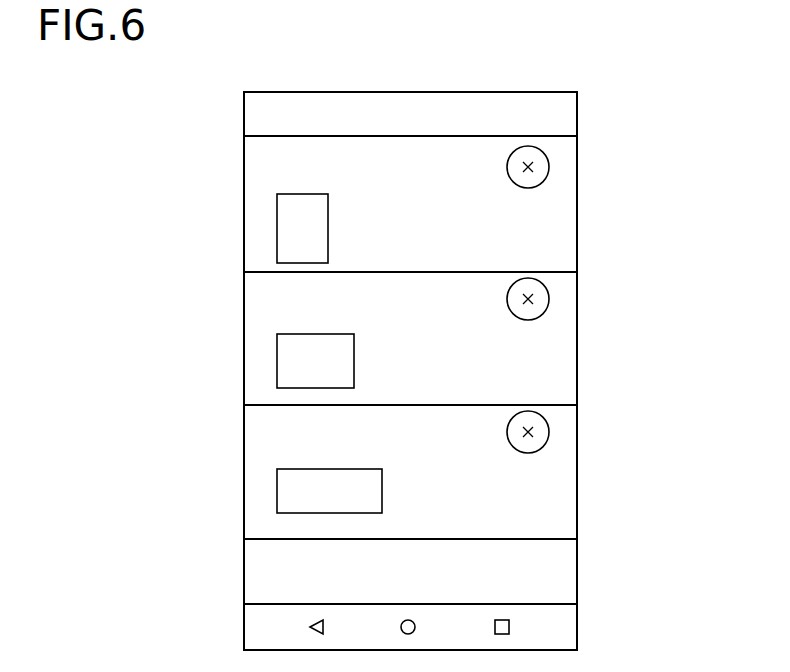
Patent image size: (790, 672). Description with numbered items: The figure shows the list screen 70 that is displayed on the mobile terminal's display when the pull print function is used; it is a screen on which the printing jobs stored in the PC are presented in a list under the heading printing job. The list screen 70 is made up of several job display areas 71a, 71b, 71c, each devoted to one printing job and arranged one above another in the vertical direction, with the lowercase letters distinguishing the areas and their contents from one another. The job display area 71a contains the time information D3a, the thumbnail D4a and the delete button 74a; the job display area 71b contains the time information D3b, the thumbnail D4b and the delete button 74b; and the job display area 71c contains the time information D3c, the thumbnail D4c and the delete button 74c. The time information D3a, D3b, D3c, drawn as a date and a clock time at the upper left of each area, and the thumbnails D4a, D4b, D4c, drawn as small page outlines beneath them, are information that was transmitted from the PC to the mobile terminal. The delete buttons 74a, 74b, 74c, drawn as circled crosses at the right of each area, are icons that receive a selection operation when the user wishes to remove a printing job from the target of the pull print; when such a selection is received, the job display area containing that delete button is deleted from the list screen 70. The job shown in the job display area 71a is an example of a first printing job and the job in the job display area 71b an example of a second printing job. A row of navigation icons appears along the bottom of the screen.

The list screen 70 is at (443, 92).
The job display area 71a is at (548, 216).
The job display area 71b is at (548, 361).
The job display area 71c is at (548, 483).
The delete button 74a is at (549, 161).
The delete button 74b is at (549, 293).
The delete button 74c is at (549, 426).
The time information D3a is at (257, 161).
The time information D3b is at (258, 297).
The time information D3c is at (258, 430).
The thumbnail D4a is at (277, 196).
The thumbnail D4b is at (277, 335).
The thumbnail D4c is at (277, 470).